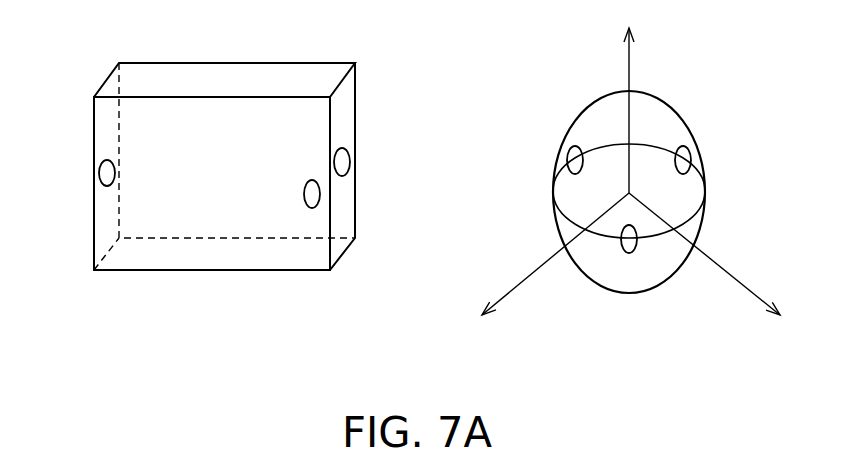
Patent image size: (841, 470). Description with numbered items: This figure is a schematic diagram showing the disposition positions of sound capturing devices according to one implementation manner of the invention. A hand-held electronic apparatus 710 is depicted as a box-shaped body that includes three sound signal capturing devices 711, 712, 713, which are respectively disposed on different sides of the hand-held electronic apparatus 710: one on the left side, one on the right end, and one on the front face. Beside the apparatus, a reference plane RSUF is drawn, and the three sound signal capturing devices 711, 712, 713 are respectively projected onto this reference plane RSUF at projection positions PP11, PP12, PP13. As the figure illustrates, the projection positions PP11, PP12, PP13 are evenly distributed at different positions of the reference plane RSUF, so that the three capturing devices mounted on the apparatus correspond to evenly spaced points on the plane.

The hand-held electronic apparatus 710 is at (243, 63).
The sound signal capturing device 711 is at (104, 174).
The sound signal capturing device 712 is at (343, 163).
The sound signal capturing device 713 is at (313, 196).
The projection position PP11 is at (570, 154).
The projection position PP12 is at (688, 154).
The projection position PP13 is at (629, 253).
The reference plane RSUF is at (690, 220).